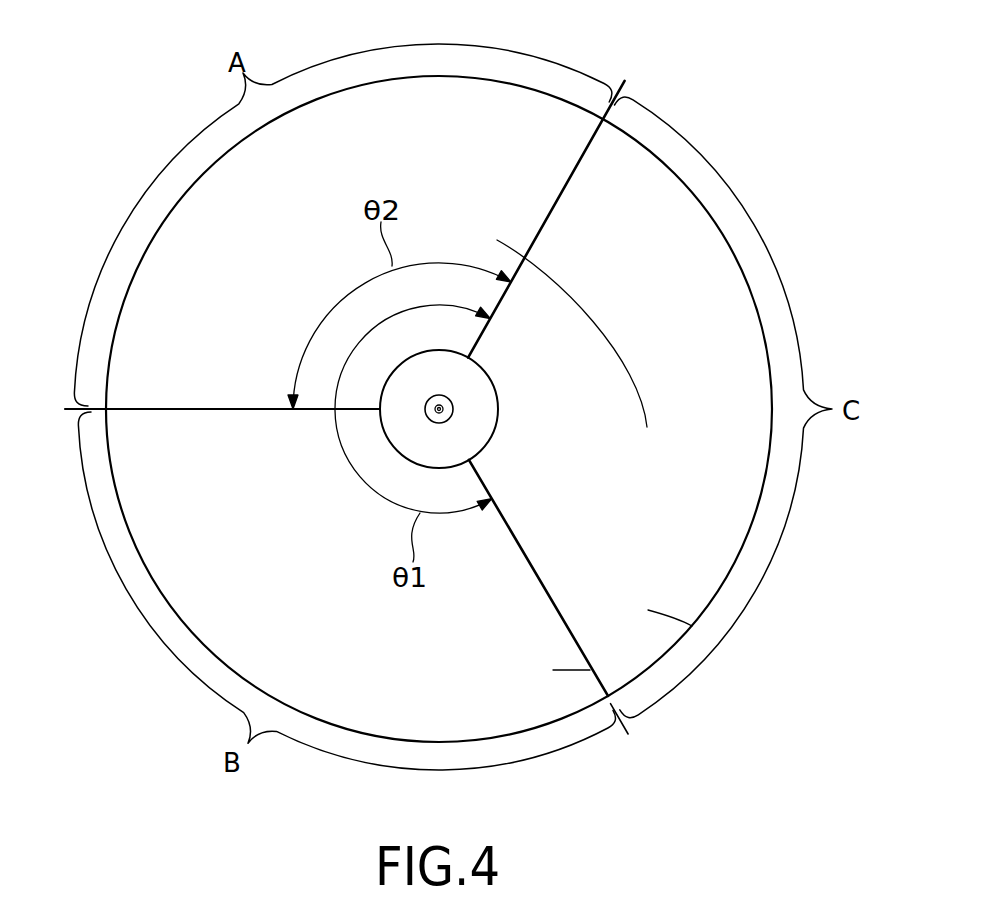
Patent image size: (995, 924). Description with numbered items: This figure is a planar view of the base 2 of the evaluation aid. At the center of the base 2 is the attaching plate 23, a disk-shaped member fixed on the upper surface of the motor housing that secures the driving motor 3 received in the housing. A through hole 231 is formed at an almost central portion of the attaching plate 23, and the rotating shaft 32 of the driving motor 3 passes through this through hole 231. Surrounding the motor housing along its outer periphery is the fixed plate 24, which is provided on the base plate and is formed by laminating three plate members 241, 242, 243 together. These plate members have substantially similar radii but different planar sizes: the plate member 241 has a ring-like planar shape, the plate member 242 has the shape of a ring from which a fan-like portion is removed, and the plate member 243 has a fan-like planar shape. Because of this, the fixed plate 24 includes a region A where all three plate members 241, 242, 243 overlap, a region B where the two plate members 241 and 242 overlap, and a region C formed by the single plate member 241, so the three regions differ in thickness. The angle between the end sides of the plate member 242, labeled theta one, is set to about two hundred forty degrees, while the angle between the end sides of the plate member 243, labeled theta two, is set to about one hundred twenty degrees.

The base 2 is at (680, 95).
The attaching plate 23 is at (397, 397).
The through hole 231 is at (429, 400).
The rotating shaft 32 is at (427, 414).
The driving motor 3 is at (415, 433).
The fixed plate 24 is at (664, 496).
The plate member 241 is at (692, 626).
The plate member 242 is at (637, 703).
The plate member 243 is at (647, 427).